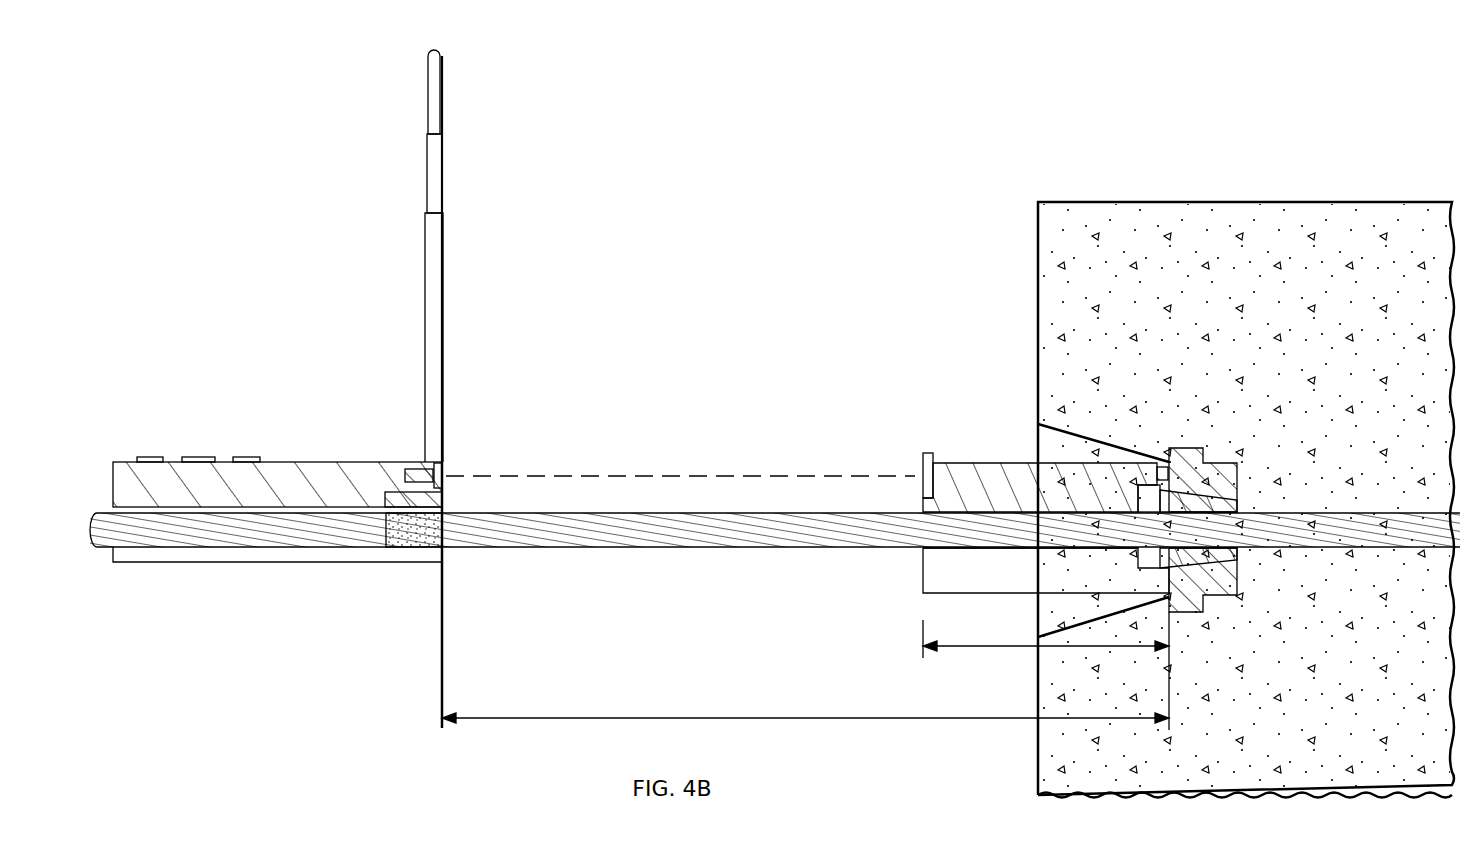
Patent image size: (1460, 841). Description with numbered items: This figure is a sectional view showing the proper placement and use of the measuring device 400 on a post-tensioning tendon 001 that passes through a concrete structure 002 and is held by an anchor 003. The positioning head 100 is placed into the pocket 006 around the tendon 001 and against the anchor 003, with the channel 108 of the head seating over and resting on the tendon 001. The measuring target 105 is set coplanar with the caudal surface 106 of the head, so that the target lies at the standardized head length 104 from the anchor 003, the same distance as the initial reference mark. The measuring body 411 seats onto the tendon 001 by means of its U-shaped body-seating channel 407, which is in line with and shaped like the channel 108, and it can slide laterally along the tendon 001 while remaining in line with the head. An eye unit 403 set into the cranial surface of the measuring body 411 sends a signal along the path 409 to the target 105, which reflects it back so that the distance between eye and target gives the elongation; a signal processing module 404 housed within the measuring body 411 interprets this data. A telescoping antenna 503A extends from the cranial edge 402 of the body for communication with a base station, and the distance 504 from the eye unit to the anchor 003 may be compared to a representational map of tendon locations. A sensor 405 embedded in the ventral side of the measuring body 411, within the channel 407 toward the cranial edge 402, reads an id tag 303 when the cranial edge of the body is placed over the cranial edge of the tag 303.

The tendon 001 is at (680, 548).
The concrete structure 002 is at (1312, 202).
The anchor 003 is at (1180, 448).
The pocket 006 is at (1060, 445).
The positioning head 100 is at (948, 463).
The standardized head length 104 is at (985, 648).
The measuring target 105 is at (922, 466).
The caudal surface 106 is at (922, 585).
The channel 108 is at (930, 556).
The tag 303 is at (408, 547).
The measuring device 400 is at (856, 142).
The cranial edge 402 is at (441, 647).
The eye unit 403 is at (443, 466).
The signal processing module 404 is at (408, 468).
The sensor 405 is at (385, 493).
The body-seating channel 407 is at (278, 562).
The signal path 409 is at (668, 475).
The measuring body 411 is at (192, 428).
The telescoping antenna 503A is at (428, 95).
The distance from the eye unit to the anchor 504 is at (803, 720).